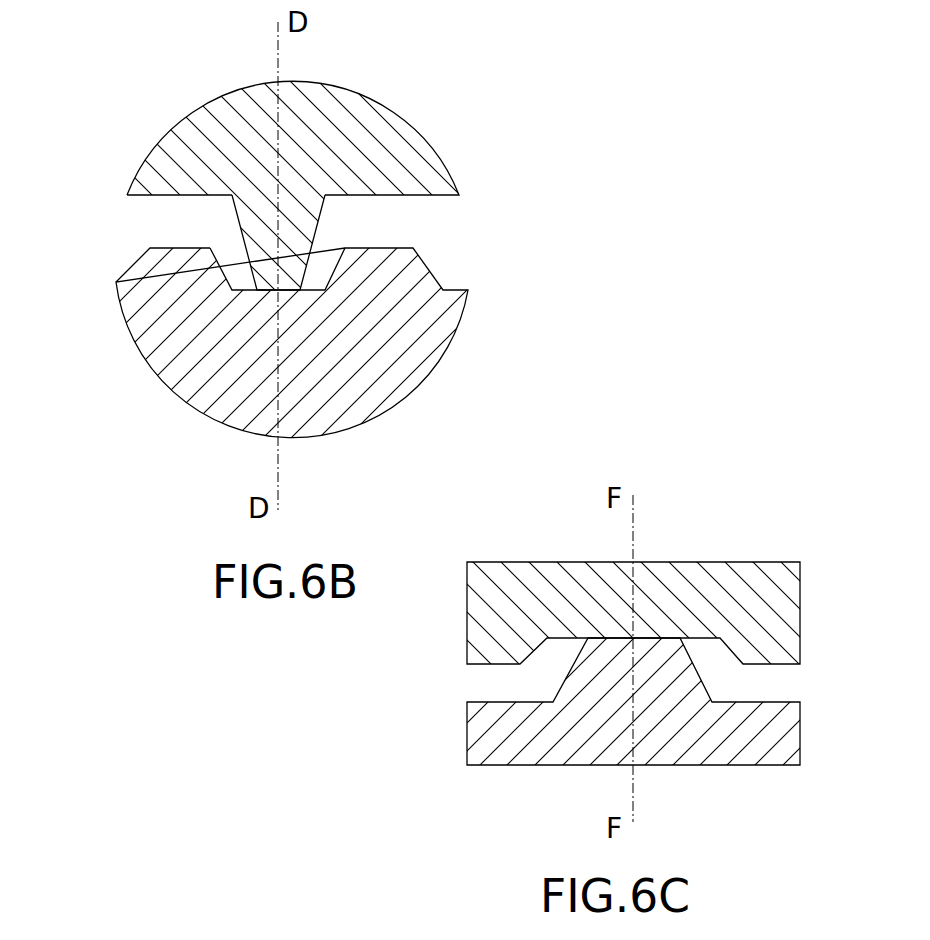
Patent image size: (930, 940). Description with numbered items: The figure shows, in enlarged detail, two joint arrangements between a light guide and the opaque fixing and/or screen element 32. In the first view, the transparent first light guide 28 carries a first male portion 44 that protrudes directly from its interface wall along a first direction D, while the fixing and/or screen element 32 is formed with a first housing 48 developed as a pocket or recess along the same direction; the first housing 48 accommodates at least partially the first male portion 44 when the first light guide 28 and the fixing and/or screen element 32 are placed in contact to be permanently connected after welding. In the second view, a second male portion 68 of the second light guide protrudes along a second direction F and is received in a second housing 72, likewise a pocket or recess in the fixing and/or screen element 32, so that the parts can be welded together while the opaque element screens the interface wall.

In FIG. 6B, the first light guide 28 is at (380, 145).
In FIG. 6B, the fixing and/or screen element 32 is at (172, 318).
In FIG. 6B, the first male portion 44 is at (253, 225).
In FIG. 6B, the first housing 48 is at (310, 272).
In FIG. 6C, the second male portion 68 is at (583, 672).
In FIG. 6C, the second housing 72 is at (703, 657).